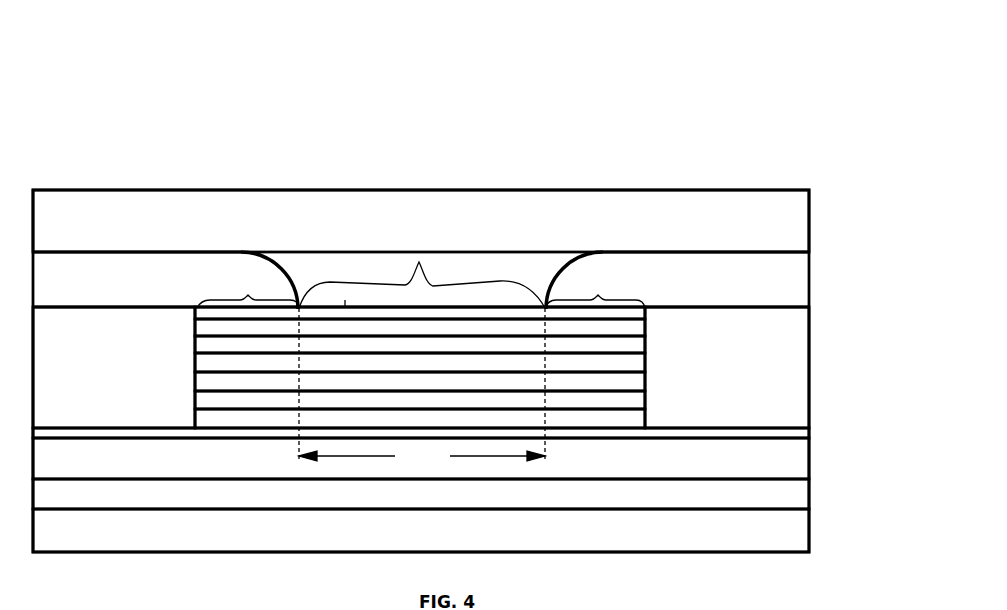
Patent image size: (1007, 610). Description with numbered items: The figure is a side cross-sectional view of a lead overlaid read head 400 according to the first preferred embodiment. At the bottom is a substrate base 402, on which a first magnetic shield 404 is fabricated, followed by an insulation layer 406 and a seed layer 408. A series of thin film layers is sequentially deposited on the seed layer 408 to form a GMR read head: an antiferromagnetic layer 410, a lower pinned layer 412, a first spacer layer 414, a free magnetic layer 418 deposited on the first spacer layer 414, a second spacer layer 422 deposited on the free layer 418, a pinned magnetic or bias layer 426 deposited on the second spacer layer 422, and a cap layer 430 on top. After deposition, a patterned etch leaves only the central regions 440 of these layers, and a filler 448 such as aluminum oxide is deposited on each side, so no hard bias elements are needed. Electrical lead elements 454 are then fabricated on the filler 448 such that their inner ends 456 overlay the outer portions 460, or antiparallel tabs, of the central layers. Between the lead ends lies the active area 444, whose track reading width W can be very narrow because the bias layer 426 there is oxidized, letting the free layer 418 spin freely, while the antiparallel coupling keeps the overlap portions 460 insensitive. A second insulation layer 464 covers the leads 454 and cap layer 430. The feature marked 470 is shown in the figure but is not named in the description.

The lead overlaid read head 400 is at (364, 124).
The substrate base 402 is at (809, 533).
The first magnetic shield 404 is at (809, 495).
The insulation layer 406 is at (809, 460).
The seed layer 408 is at (809, 431).
The antiferromagnetic layer 410 is at (647, 417).
The lower pinned layer 412 is at (647, 397).
The first spacer layer 414 is at (647, 378).
The free magnetic layer 418 is at (647, 367).
The second spacer layer 422 is at (647, 348).
The pinned magnetic layer 426 is at (646, 327).
The cap layer 430 is at (647, 313).
The central region 440 is at (485, 262).
The active area 444 is at (422, 271).
The filler 448 is at (84, 307).
The electrical lead elements 454 is at (152, 253).
The inner ends 456 is at (284, 268).
The outer portions 460 is at (421, 290).
The second insulation layer 464 is at (809, 221).
The edge boundary 470 is at (347, 308).